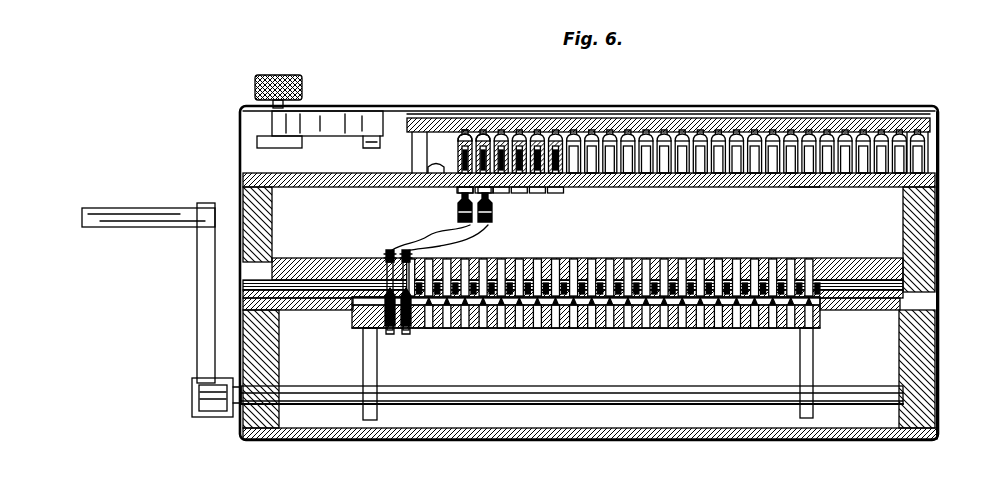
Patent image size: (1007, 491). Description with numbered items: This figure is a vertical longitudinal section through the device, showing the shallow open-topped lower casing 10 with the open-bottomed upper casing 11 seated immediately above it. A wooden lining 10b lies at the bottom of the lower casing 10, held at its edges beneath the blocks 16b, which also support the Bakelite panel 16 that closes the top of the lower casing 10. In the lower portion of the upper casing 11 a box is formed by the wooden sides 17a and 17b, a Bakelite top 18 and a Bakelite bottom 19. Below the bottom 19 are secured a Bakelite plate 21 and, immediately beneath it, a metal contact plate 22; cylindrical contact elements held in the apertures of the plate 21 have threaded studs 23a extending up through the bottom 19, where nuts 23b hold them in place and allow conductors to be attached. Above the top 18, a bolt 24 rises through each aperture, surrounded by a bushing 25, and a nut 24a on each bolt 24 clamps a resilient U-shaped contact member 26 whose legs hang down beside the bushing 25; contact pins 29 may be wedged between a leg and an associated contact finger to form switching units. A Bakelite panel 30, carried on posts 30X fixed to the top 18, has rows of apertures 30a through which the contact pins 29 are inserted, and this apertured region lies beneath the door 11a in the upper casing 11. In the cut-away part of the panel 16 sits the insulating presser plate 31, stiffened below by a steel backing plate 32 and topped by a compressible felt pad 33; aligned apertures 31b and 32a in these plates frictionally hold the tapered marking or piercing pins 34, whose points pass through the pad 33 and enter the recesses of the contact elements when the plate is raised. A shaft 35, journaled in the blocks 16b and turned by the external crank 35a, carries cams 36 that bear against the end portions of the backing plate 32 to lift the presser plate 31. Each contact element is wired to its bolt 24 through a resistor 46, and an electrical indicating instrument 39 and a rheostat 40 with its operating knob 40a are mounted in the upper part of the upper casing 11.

The lower casing 10 is at (938, 349).
The lining 10b is at (453, 440).
The upper casing 11 is at (940, 213).
The door 11a is at (670, 108).
The panel 16 is at (297, 312).
The blocks 16b is at (264, 363).
The side 17a is at (880, 240).
The side 17b is at (247, 203).
The top 18 is at (875, 175).
The bottom 19 is at (833, 268).
The plate 21 is at (280, 287).
The contact plate 22 is at (308, 294).
The stud 23a is at (386, 254).
The nuts 23b is at (400, 256).
The bolt 24 is at (512, 135).
The nut 24a is at (463, 134).
The bushing 25 is at (455, 168).
The U-shaped contact member 26 is at (805, 165).
The contact pins 29 is at (468, 130).
The panel 30 is at (863, 120).
The apertures 30a is at (580, 115).
The posts 30X is at (415, 160).
The presser plate 31 is at (355, 306).
The apertures 31b is at (456, 320).
The backing plate 32 is at (372, 322).
The apertures 32a is at (491, 322).
The pad 33 is at (570, 323).
The marking or piercing pins 34 is at (398, 335).
The shaft 35 is at (597, 396).
The crank 35a is at (205, 313).
The cams 36 is at (373, 378).
The electrical indicating instrument 39 is at (327, 128).
The rheostat 40 is at (270, 138).
The operating knob 40a is at (280, 76).
The resistor 46 is at (457, 207).